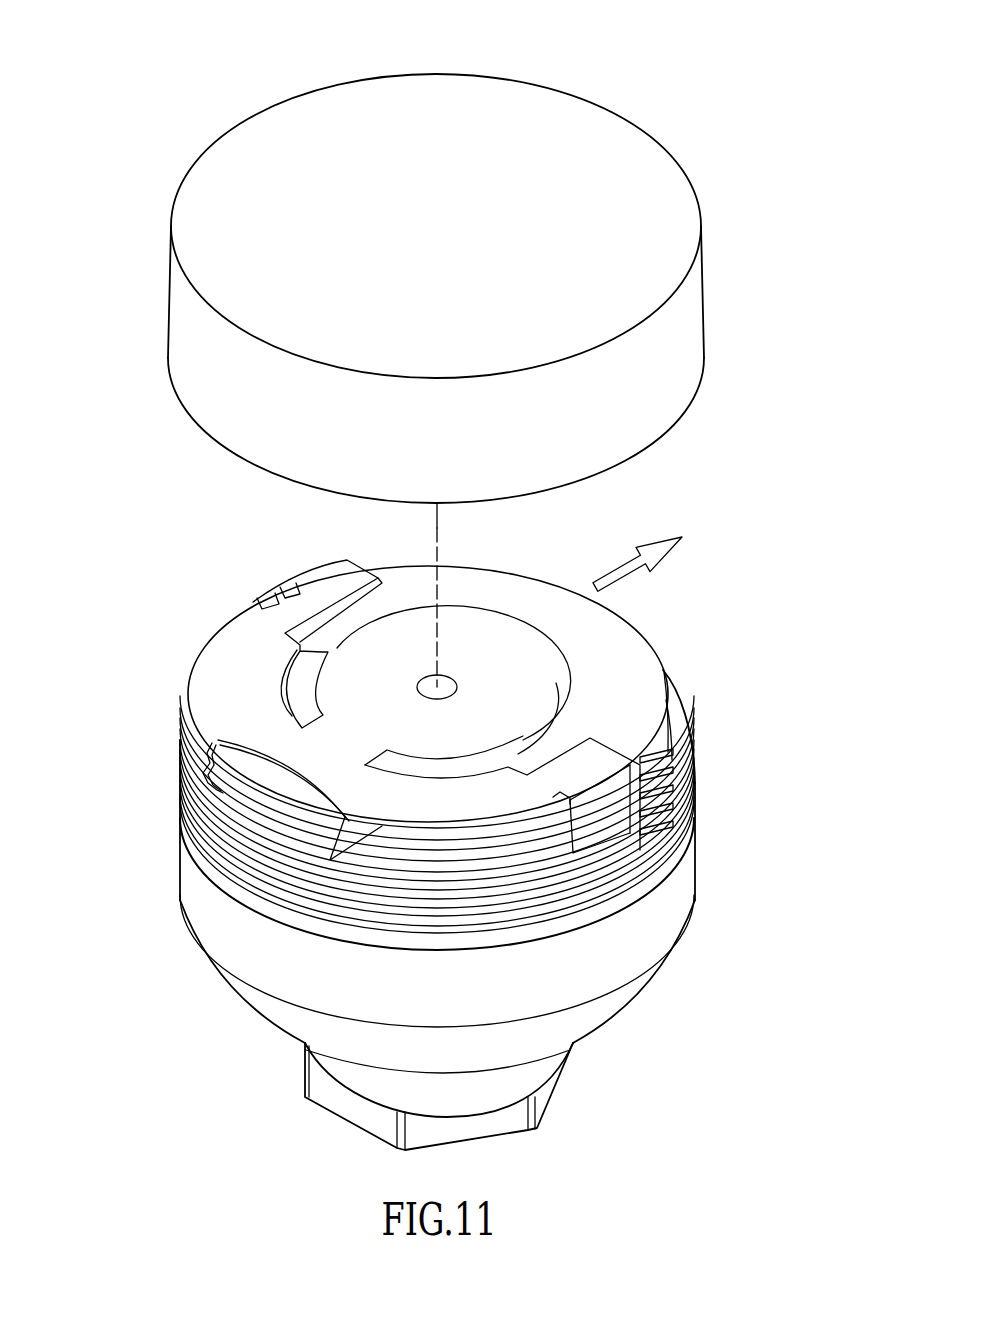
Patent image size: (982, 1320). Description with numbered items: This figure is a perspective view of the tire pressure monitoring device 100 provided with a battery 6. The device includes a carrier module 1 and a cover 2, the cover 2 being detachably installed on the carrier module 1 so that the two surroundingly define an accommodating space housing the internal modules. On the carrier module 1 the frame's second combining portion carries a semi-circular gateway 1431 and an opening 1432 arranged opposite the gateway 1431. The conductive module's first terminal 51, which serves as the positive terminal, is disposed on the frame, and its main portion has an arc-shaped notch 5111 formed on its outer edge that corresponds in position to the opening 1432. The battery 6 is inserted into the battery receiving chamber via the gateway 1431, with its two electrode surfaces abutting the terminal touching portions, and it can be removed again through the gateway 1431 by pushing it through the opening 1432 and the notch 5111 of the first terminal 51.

The tire pressure monitoring device 100 is at (212, 29).
The carrier module 1 is at (658, 986).
The cover 2 is at (624, 110).
The battery 6 is at (641, 636).
The first terminal 51 is at (304, 566).
The notch 5111 is at (291, 773).
The gateway 1431 is at (681, 712).
The opening 1432 is at (212, 780).